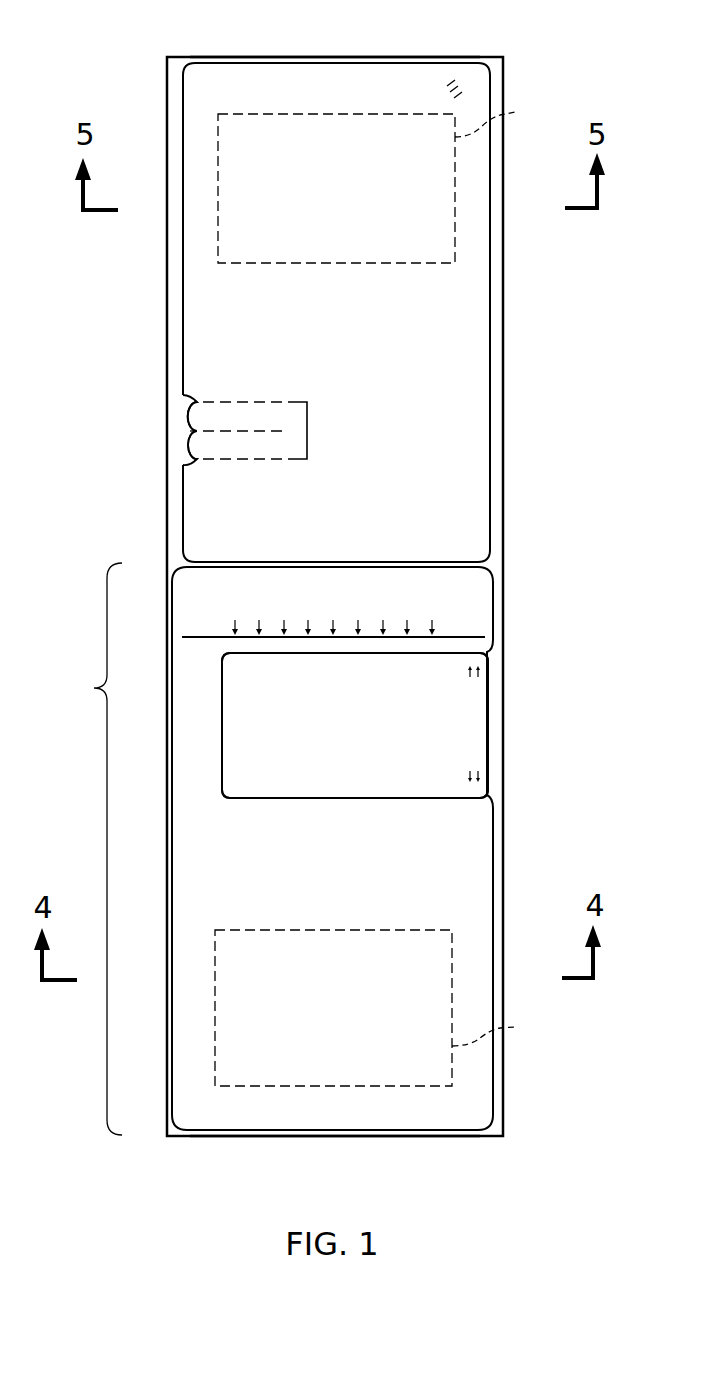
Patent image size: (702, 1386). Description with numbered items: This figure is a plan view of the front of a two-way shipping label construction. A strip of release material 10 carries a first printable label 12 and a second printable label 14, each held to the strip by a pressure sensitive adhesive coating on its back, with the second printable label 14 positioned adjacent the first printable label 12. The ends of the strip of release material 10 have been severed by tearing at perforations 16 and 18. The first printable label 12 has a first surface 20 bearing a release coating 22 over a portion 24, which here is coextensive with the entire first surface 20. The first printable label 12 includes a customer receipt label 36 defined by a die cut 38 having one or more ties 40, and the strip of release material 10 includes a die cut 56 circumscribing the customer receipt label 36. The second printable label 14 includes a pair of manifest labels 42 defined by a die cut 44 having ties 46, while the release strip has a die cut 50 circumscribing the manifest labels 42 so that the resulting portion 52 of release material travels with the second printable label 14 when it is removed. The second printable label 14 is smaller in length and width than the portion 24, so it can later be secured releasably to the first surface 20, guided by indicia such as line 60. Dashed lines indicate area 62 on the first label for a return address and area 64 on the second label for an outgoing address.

The strip of release material 10 is at (503, 325).
The first printable label 12 is at (320, 911).
The second printable label 14 is at (322, 302).
The perforation 16 is at (293, 56).
The perforation 18 is at (232, 1137).
The first surface 20 is at (473, 860).
The release coating 22 is at (201, 828).
The portion 24 is at (87, 849).
The customer receipt label 36 is at (442, 757).
The die cut 38 is at (327, 797).
The ties 40 is at (260, 653).
The manifest labels 42 is at (194, 406).
The die cut 44 is at (262, 401).
The ties 46 is at (300, 431).
The die cut 50 is at (190, 431).
The portion 52 is at (199, 402).
The die cut 56 is at (493, 663).
The line 60 is at (485, 637).
The area 62 is at (501, 1030).
The area 64 is at (499, 104).